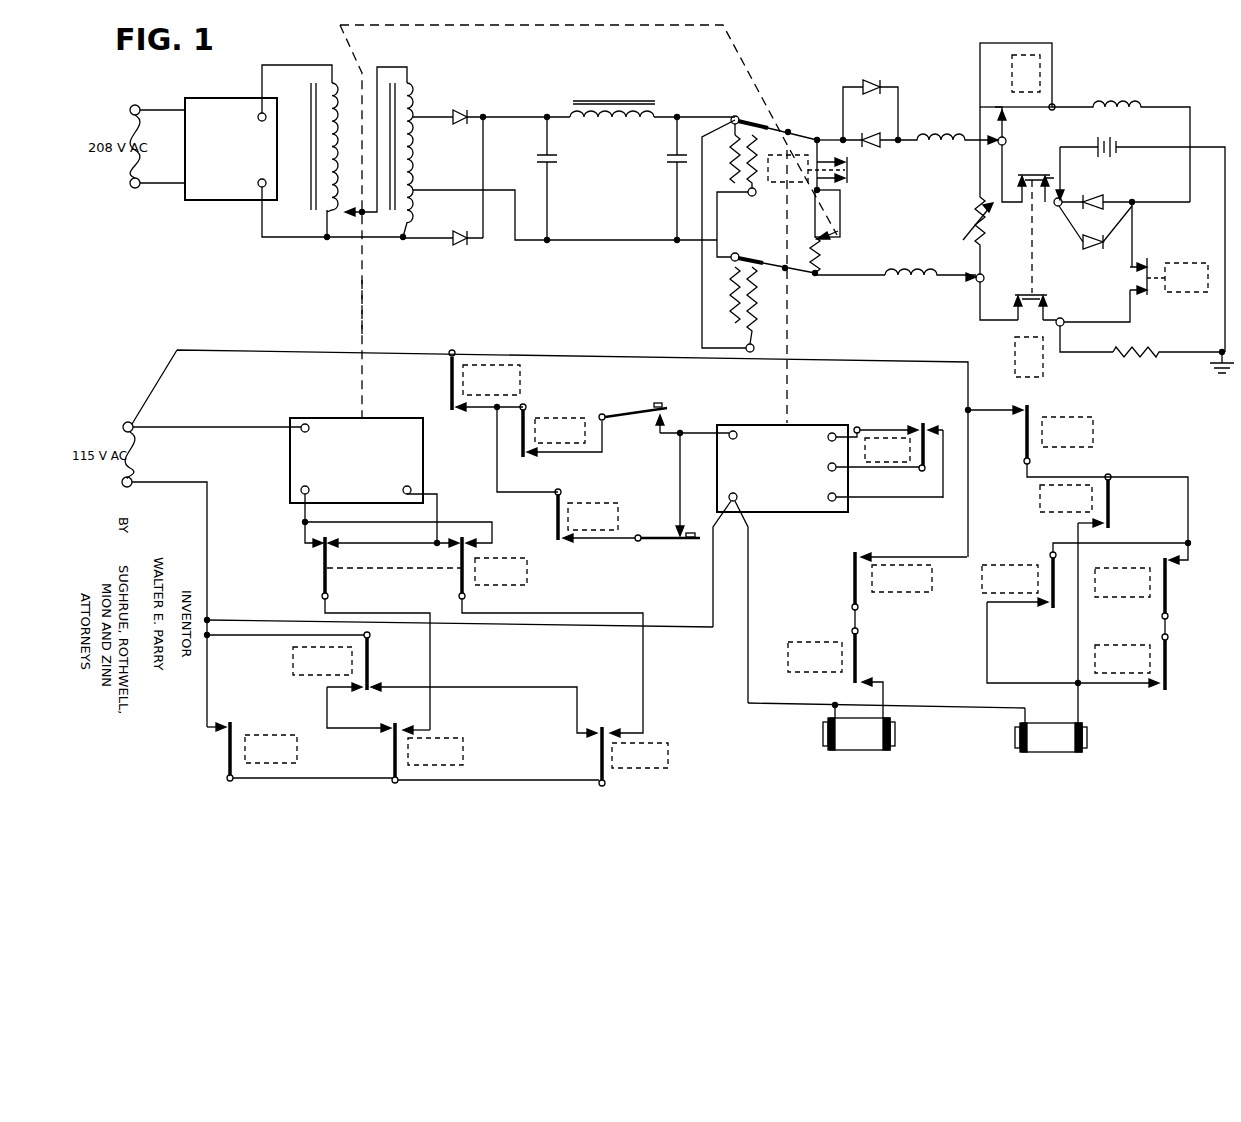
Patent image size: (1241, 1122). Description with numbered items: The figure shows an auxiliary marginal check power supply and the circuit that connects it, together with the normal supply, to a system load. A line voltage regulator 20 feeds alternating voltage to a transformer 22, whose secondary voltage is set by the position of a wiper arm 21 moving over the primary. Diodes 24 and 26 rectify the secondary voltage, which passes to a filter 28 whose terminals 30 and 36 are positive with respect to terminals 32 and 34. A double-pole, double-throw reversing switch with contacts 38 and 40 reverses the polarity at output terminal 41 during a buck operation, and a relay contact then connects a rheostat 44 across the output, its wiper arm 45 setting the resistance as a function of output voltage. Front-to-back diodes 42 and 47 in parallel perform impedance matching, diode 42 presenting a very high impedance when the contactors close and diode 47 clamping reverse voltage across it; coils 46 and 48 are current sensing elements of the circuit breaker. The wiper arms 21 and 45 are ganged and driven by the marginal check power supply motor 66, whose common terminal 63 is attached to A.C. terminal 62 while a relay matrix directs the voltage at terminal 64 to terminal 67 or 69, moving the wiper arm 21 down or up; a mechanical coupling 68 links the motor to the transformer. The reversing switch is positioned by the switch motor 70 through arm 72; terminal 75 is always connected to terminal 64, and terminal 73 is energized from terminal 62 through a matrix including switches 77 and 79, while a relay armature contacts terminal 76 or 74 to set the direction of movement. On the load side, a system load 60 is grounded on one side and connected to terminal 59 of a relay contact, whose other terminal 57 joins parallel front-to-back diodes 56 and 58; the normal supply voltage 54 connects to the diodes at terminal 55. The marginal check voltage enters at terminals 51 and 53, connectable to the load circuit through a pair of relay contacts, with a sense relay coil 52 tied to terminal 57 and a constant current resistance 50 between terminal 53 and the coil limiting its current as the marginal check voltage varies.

The line voltage regulator 20 is at (234, 193).
The wiper arm 21 is at (347, 216).
The transformer 22 is at (410, 80).
The diode 24 is at (464, 110).
The diode 26 is at (458, 245).
The filter 28 is at (655, 110).
The filter terminal 30 is at (733, 116).
The filter terminal 32 is at (754, 196).
The filter terminal 34 is at (734, 268).
The filter terminal 36 is at (748, 352).
The reversing switch contact 38 is at (760, 126).
The reversing switch contact 40 is at (742, 256).
The output terminal 41 is at (828, 128).
The diode 42 is at (864, 82).
The rheostat 44 is at (822, 262).
The rheostat wiper arm 45 is at (838, 240).
The coil 46 is at (950, 132).
The diode 47 is at (872, 147).
The coil 48 is at (897, 272).
The constant current resistance 50 is at (975, 213).
The terminal 51 is at (1007, 142).
The sense relay coil 52 is at (1108, 103).
The terminal 53 is at (976, 273).
The normal supply voltage 54 is at (1118, 150).
The terminal 55 is at (1060, 198).
The diode 56 is at (1093, 196).
The terminal 57 is at (1133, 200).
The diode 58 is at (1082, 249).
The terminal 59 is at (1062, 318).
The system load 60 is at (1137, 350).
The A.C. terminal 62 is at (137, 424).
The common motor terminal 63 is at (301, 425).
The A.C. terminal 64 is at (133, 486).
The marginal check power supply motor 66 is at (366, 426).
The motor terminal 67 is at (301, 490).
The mechanical coupling 68 is at (360, 318).
The motor terminal 69 is at (412, 489).
The switch motor 70 is at (770, 424).
The arm 72 is at (786, 338).
The switch motor terminal 73 is at (732, 430).
The terminal 74 is at (857, 427).
The switch motor terminal 75 is at (729, 495).
The terminal 76 is at (866, 500).
The switch 77 is at (662, 402).
The switch 79 is at (688, 534).